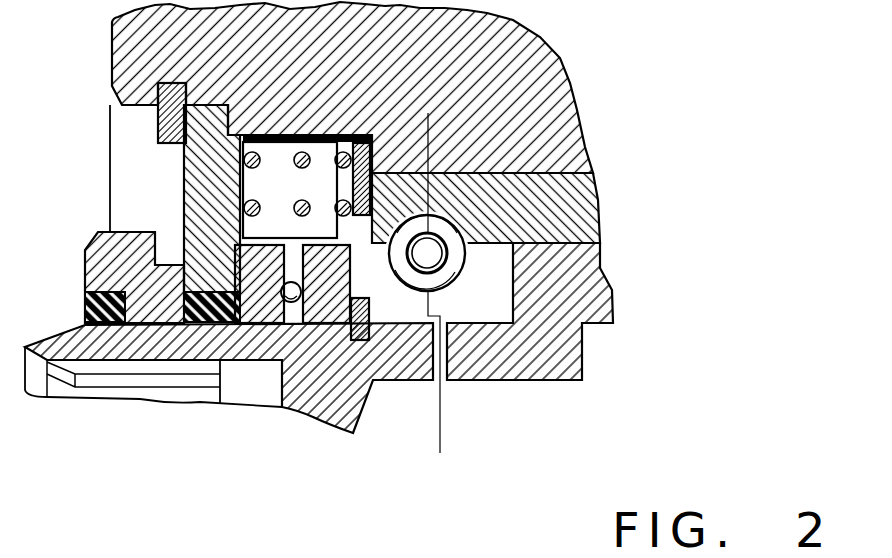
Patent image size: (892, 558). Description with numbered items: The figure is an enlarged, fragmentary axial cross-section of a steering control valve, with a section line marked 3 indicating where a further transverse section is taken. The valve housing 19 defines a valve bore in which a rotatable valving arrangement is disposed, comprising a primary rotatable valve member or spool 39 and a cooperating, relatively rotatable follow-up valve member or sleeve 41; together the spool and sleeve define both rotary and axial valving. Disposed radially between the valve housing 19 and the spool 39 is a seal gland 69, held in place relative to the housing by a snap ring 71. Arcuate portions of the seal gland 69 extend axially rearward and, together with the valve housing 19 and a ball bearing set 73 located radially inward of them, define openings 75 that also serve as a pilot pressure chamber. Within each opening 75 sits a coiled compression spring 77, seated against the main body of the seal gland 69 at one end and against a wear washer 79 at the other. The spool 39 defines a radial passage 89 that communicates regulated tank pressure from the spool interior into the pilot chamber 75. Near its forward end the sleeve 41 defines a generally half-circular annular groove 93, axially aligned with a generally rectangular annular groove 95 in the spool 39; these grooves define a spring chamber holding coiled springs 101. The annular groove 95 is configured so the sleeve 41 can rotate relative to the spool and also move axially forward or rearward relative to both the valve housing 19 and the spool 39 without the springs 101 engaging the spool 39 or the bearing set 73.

The valve housing 19 is at (125, 62).
The follow-up valve member 41 is at (575, 207).
The primary rotatable valve member 39 is at (590, 290).
The springs 101 is at (462, 262).
The annular groove 95 is at (495, 305).
The ball bearing set 73 is at (277, 328).
The radial passage 89 is at (433, 370).
The seal gland 69 is at (110, 274).
The openings 75 is at (256, 226).
The snap ring 71 is at (162, 125).
The coiled compression spring 77 is at (268, 150).
The wear washer 79 is at (362, 138).
The annular groove 93 is at (450, 234).
The section line 3- 3 is at (428, 122).